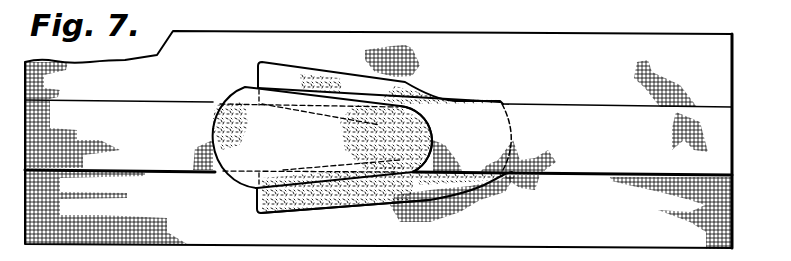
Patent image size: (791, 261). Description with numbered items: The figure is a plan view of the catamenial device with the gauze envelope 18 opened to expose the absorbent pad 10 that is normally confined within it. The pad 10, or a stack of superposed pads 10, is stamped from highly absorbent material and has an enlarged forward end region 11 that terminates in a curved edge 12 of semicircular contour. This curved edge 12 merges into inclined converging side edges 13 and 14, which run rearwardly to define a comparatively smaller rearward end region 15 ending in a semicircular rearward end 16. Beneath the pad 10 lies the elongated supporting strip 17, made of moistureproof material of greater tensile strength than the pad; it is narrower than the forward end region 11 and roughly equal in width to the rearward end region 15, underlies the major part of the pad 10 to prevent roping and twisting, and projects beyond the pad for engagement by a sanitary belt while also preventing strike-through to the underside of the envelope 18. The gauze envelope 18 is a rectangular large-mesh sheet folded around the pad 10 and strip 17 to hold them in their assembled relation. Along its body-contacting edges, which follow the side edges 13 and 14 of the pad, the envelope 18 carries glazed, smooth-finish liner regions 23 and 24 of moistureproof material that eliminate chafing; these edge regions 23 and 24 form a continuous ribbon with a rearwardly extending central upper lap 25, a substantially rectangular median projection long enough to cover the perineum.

The absorbent pad 10 is at (252, 104).
The enlarged forward end region 11 is at (214, 122).
The curved edge 12 is at (228, 178).
The converging side edge 13 is at (341, 98).
The converging side edge 14 is at (344, 178).
The rearward end region 15 is at (433, 125).
The semicircular rearward end 16 is at (436, 135).
The supporting strip 17 is at (592, 115).
The gauze envelope 18 is at (498, 38).
The smooth finish edge lining region 23 is at (298, 72).
The smooth finish edge lining region 24 is at (372, 198).
The central upper lap 25 is at (503, 102).